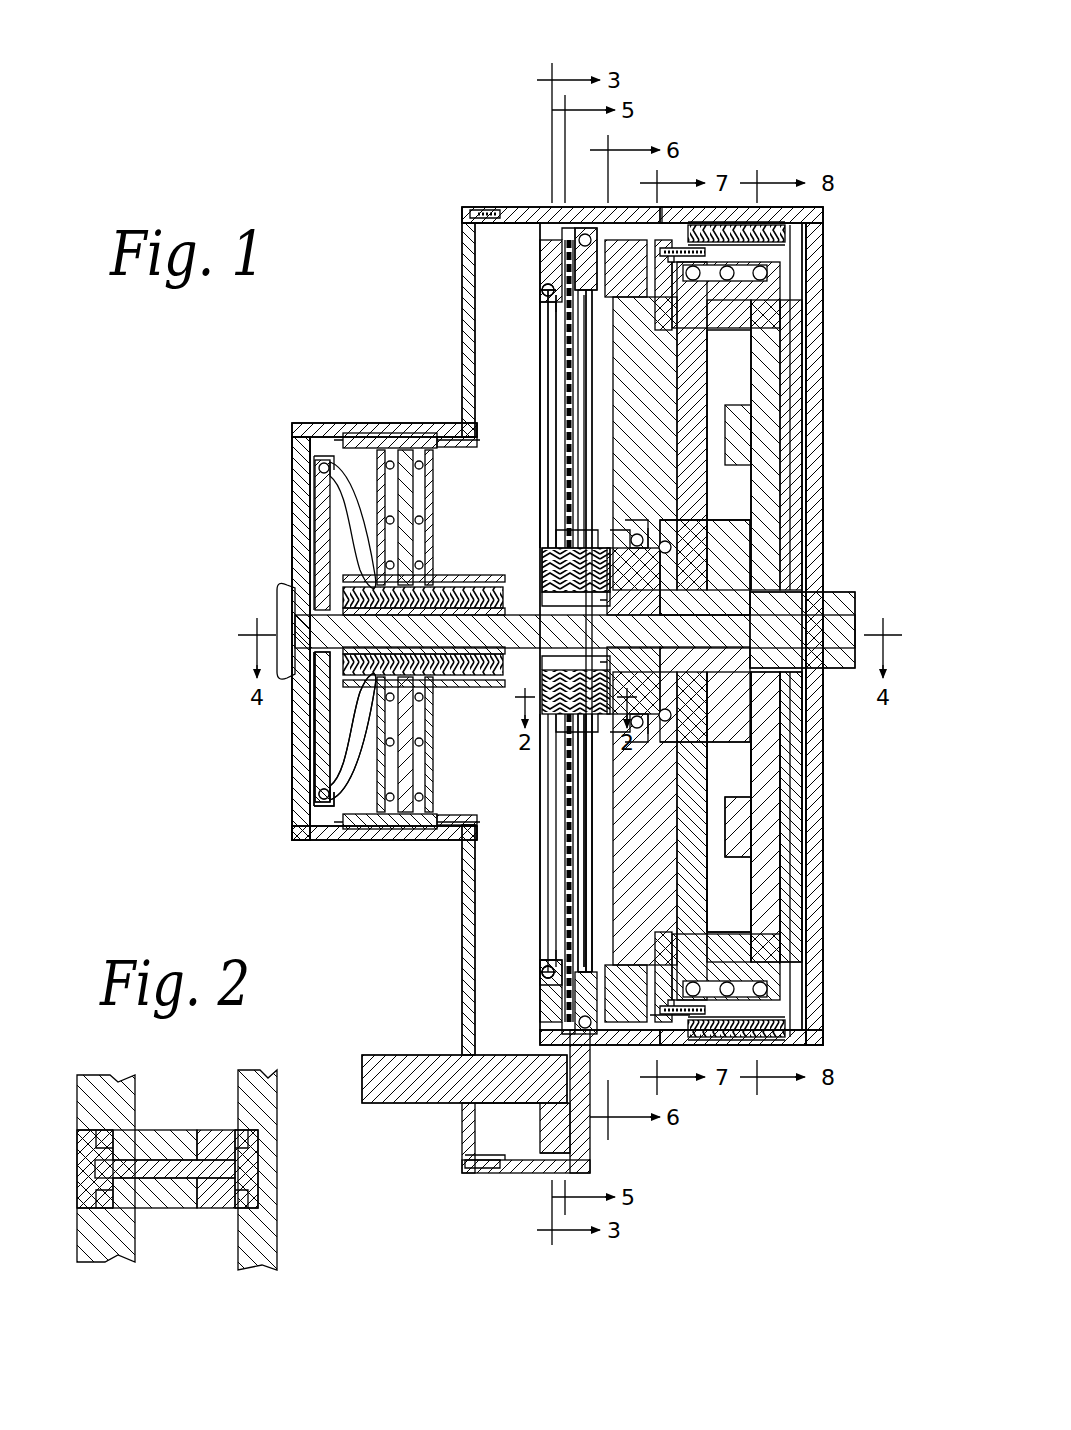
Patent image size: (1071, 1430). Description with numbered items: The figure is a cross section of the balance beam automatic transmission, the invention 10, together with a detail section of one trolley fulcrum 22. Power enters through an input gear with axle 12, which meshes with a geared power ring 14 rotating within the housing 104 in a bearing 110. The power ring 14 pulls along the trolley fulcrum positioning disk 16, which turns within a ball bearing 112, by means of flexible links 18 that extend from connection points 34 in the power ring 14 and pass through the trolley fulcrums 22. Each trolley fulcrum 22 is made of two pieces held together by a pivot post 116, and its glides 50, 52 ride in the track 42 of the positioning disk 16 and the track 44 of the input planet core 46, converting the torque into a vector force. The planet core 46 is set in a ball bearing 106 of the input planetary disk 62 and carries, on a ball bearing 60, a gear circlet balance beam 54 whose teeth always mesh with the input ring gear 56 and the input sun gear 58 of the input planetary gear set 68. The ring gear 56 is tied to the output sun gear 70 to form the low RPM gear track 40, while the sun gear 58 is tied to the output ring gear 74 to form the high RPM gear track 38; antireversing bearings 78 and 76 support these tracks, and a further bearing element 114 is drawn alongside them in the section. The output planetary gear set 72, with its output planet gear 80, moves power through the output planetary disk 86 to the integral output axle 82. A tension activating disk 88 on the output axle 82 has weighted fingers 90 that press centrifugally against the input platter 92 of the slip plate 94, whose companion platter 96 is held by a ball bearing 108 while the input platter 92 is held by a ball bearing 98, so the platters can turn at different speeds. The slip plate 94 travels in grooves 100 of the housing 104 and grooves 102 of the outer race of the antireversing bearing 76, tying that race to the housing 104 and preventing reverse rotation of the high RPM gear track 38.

In FIG. 1, the invention 10 is at (345, 165).
In FIG. 1, the input gear with axle 12 is at (545, 1105).
In FIG. 1, the geared power ring 14 is at (540, 268).
In FIG. 1, the trolley fulcrum positioning disk 16 is at (545, 962).
In FIG. 1, the flexible links 18 is at (565, 458).
In FIG. 1, the trolley fulcrums 22 is at (571, 631).
In FIG. 2, the trolley fulcrums 22 is at (225, 1290).
In FIG. 1, the connection points 34 is at (585, 295).
In FIG. 1, the high RPM gear track 38 is at (705, 408).
In FIG. 1, the low RPM gear track 40 is at (792, 385).
In FIG. 1, the track 42 is at (545, 416).
In FIG. 2, the track 42 is at (100, 1132).
In FIG. 1, the track 44 is at (578, 370).
In FIG. 2, the track 44 is at (238, 1140).
In FIG. 1, the planet core 46 is at (648, 363).
In FIG. 1, the trolley fulcrum glide 50 is at (540, 690).
In FIG. 2, the trolley fulcrum glide 50 is at (95, 1178).
In FIG. 1, the trolley fulcrum glide 52 is at (585, 545).
In FIG. 2, the trolley fulcrum glide 52 is at (248, 1178).
In FIG. 1, the gear circlet balance beam 54 is at (700, 330).
In FIG. 1, the input ring gear 56 is at (700, 300).
In FIG. 1, the input sun gear 58 is at (700, 570).
In FIG. 1, the ball bearing 60 is at (668, 548).
In FIG. 1, the input planetary disk 62 is at (626, 631).
In FIG. 1, the input planetary gear set 68 is at (668, 108).
In FIG. 1, the output sun gear 70 is at (785, 562).
In FIG. 1, the output planetary gear set 72 is at (762, 108).
In FIG. 1, the output ring gear 74 is at (815, 962).
In FIG. 1, the antireversing bearing 76 is at (305, 530).
In FIG. 1, the antireversing bearing 78 is at (786, 233).
In FIG. 1, the output planet gear 80 is at (770, 560).
In FIG. 1, the output axle 82 is at (292, 620).
In FIG. 1, the output planetary disk 86 is at (740, 770).
In FIG. 1, the tension activating disk 88 is at (320, 505).
In FIG. 1, the weighted fingers 90 is at (322, 468).
In FIG. 1, the input platter 92 is at (325, 735).
In FIG. 1, the slip plate 94 is at (378, 432).
In FIG. 1, the companion platter 96 is at (402, 712).
In FIG. 1, the ball bearing 98 is at (335, 440).
In FIG. 1, the grooves 100 is at (440, 433).
In FIG. 1, the grooves 102 is at (335, 700).
In FIG. 1, the housing 104 is at (340, 596).
In FIG. 1, the ball bearing 106 is at (775, 695).
In FIG. 1, the ball bearing 108 is at (412, 760).
In FIG. 1, the bearing 110 is at (545, 207).
In FIG. 1, the ball bearing 112 is at (548, 292).
In FIG. 1, the ball bearing 114 is at (770, 274).
In FIG. 1, the pivot post 116 is at (565, 760).
In FIG. 2, the pivot post 116 is at (172, 1178).